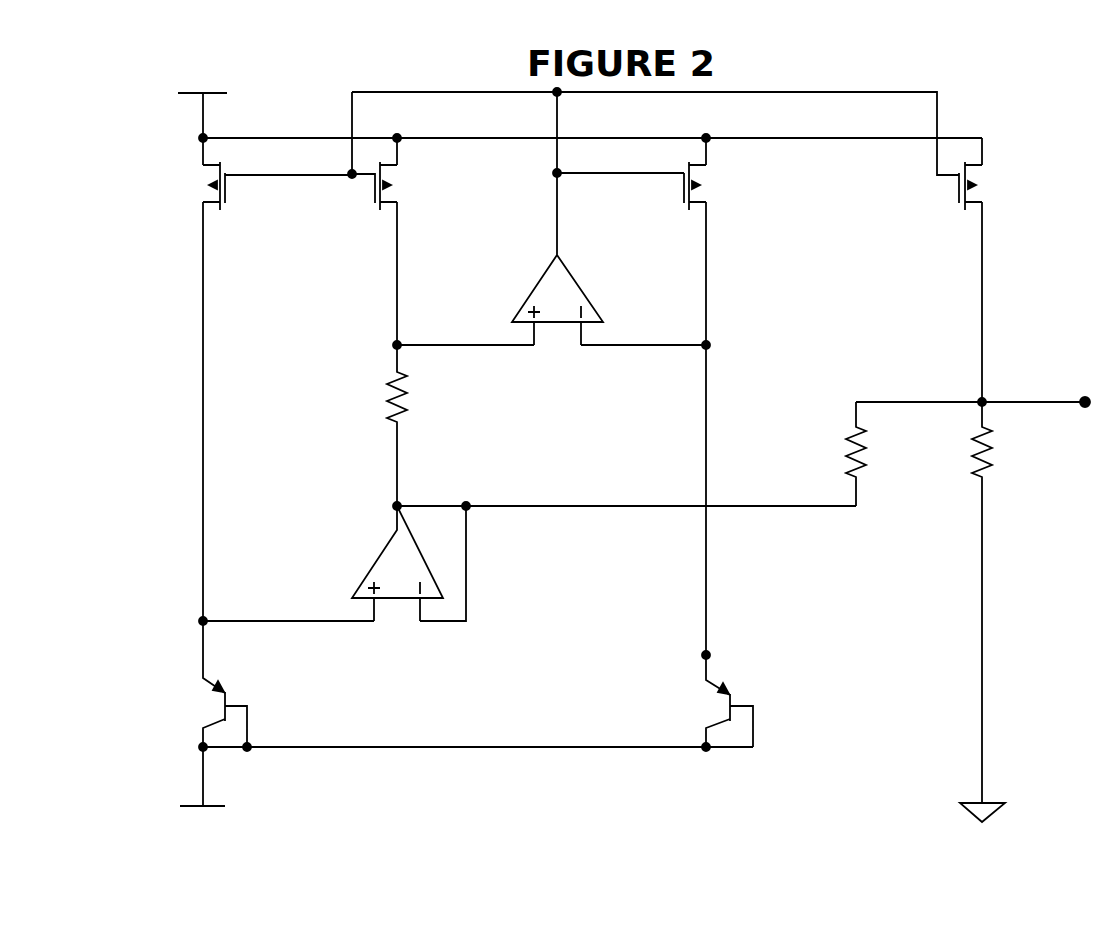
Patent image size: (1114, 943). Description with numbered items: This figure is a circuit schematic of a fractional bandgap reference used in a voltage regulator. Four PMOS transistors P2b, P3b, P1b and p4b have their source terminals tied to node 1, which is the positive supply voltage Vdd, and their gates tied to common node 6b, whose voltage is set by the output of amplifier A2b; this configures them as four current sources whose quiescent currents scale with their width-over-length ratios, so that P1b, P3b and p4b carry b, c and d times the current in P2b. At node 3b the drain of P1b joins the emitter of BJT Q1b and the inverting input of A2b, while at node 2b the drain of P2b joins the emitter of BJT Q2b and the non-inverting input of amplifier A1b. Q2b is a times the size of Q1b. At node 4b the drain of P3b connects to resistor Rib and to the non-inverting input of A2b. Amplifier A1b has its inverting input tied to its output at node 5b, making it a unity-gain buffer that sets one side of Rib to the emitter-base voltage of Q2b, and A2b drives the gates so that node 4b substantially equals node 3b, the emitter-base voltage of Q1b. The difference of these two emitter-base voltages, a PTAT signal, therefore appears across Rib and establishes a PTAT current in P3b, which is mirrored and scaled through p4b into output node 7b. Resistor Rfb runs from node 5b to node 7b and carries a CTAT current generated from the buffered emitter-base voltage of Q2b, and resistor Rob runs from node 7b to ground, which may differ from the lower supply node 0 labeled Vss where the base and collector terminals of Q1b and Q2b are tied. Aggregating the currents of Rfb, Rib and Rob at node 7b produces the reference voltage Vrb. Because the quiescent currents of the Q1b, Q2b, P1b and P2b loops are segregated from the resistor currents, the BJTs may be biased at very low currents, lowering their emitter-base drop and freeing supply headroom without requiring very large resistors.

The positive supply voltage Vdd is at (173, 118).
The node 1 is at (578, 132).
The node 6b is at (592, 131).
The transistor P2b is at (180, 388).
The transistor P3b is at (418, 241).
The transistor P1b is at (727, 241).
The transistor P4b p4b is at (1001, 270).
The amplifier A2b is at (568, 218).
The node 4b is at (445, 345).
The node 3b is at (665, 493).
The resistor Rib is at (383, 425).
The node 5b is at (624, 561).
The amplifier A1b is at (368, 563).
The node 2b is at (286, 606).
The node 7b is at (970, 385).
The reference voltage Vrb is at (1059, 379).
The resistor Rfb is at (842, 454).
The resistor Rob is at (968, 602).
The BJT Q2b is at (190, 684).
The BJT Q1b is at (696, 699).
The node 0 (ground node) 0 is at (467, 766).
The negative supply voltage VSS Vss is at (176, 787).